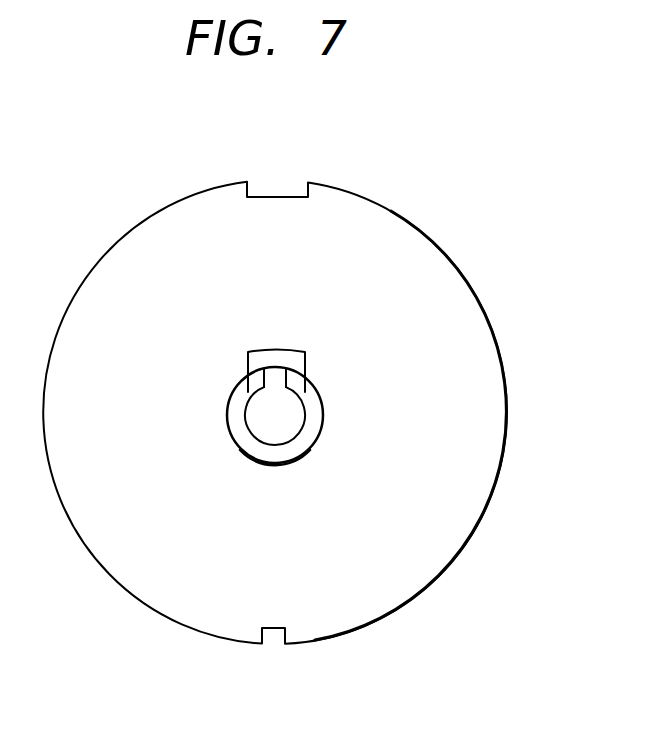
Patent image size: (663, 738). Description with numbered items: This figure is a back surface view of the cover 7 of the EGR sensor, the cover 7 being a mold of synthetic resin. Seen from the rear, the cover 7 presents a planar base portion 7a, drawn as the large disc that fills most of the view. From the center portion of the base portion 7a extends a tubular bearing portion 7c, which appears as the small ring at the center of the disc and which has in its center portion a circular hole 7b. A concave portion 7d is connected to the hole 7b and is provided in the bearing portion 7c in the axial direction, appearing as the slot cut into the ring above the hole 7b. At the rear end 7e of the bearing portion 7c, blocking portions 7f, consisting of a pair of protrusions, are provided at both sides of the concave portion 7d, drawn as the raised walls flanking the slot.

The cover 7 is at (450, 258).
The base portion 7a is at (480, 463).
The circular hole 7b is at (248, 421).
The bearing portion 7c is at (320, 405).
The concave portion 7d is at (278, 385).
The rear end 7e is at (302, 442).
The blocking portions 7f is at (298, 383).